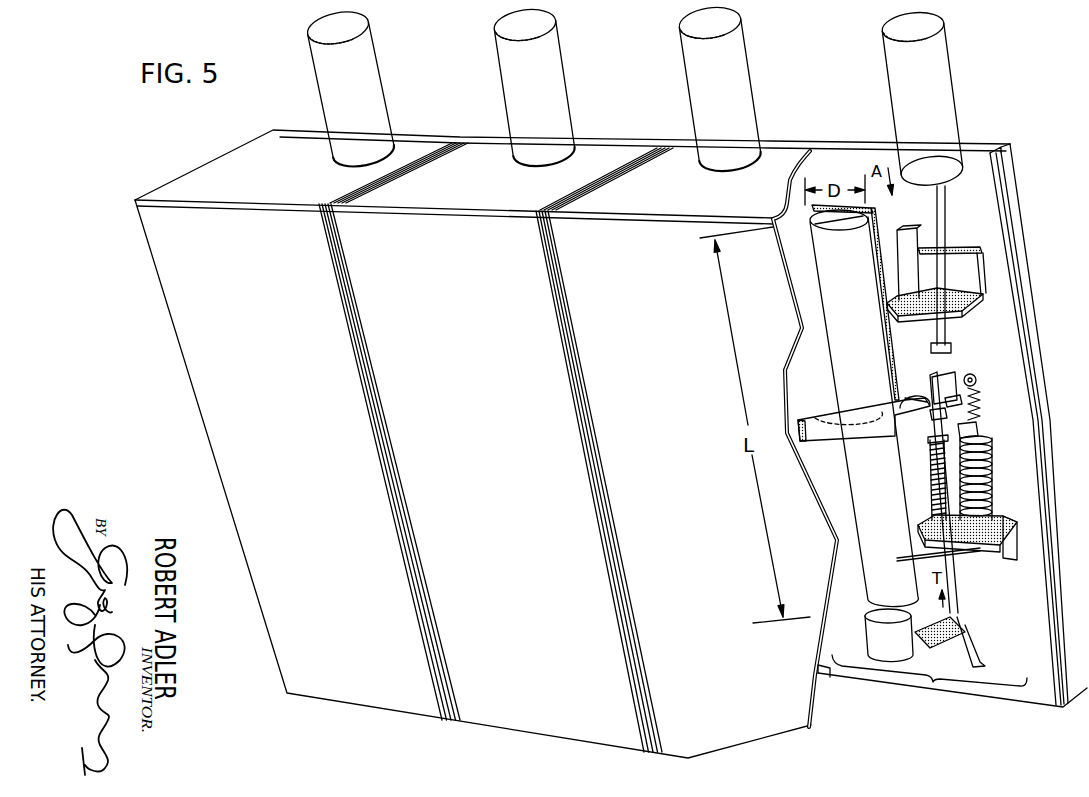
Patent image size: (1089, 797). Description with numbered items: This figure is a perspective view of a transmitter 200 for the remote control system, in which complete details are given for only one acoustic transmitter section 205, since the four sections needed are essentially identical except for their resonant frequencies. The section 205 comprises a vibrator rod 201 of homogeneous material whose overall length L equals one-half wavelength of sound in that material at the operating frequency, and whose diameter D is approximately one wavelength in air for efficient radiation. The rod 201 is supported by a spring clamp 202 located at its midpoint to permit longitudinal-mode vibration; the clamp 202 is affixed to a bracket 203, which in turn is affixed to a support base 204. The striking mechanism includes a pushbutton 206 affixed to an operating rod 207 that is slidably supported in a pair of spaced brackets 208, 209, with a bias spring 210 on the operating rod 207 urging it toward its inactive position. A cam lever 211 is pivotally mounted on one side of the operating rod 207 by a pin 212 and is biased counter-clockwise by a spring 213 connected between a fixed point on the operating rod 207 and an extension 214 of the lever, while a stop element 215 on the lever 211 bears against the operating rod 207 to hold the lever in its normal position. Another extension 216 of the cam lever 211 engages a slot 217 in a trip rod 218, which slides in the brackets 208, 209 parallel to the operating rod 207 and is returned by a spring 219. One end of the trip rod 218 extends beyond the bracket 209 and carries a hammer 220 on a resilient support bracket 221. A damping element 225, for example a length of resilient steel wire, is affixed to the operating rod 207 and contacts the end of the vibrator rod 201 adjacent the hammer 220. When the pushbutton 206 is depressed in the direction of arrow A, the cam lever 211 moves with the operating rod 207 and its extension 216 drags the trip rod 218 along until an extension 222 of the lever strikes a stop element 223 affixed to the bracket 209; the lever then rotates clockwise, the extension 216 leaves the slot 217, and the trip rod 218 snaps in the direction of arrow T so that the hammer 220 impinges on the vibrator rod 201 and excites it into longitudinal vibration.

The transmitter 200 is at (1030, 282).
The vibrator rod 201 is at (870, 575).
The spring clamp 202 is at (900, 392).
The bracket 203 is at (802, 433).
The support base 204 is at (1025, 321).
The acoustic transmitter section 205 is at (933, 682).
The pushbutton 206 is at (937, 62).
The operating rod 207 is at (942, 221).
The bracket 208 is at (973, 302).
The bracket 209 is at (1007, 556).
The bias spring 210 is at (988, 486).
The cam lever 211 is at (953, 400).
The pin 212 is at (980, 375).
The spring 213 is at (978, 417).
The extension 214 is at (960, 373).
The stop element 215 is at (967, 430).
The extension 216 is at (937, 413).
The slot 217 is at (927, 402).
The trip rod 218 is at (905, 229).
The spring 219 is at (938, 497).
The hammer 220 is at (873, 633).
The resilient support bracket 221 is at (957, 636).
The extension 222 is at (932, 376).
The stop element 223 is at (947, 473).
The damping element 225 is at (980, 552).